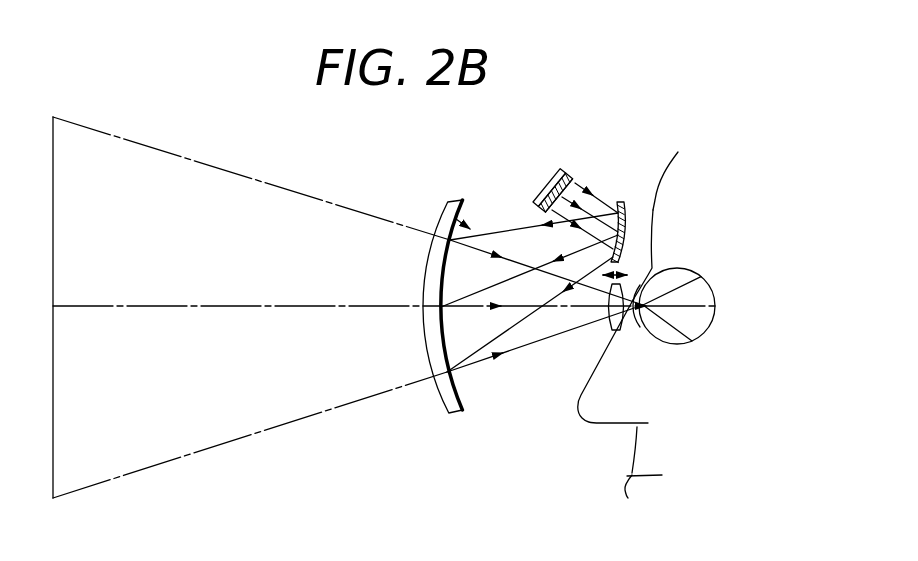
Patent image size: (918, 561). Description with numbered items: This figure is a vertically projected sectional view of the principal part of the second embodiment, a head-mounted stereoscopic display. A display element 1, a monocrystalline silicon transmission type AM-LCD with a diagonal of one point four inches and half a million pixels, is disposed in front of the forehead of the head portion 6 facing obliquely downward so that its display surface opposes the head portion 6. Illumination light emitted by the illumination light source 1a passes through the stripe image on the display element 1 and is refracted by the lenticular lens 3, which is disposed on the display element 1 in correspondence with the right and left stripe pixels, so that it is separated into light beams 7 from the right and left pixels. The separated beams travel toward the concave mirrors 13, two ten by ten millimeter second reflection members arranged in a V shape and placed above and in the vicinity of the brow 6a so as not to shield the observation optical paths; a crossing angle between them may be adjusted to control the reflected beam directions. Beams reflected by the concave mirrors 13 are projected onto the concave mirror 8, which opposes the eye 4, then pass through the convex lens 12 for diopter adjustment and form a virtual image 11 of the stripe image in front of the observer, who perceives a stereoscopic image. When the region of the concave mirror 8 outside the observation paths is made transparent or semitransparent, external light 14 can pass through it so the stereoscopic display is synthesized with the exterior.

The display element 1 is at (569, 174).
The illumination light source 1a is at (541, 194).
The lenticular lens 3 is at (576, 180).
The eye 4 is at (708, 277).
The head portion 6 is at (673, 165).
The brow 6a is at (654, 208).
The light beam 7 is at (546, 346).
The concave mirror 8 is at (460, 406).
The virtual image 11 is at (53, 353).
The convex lens 12 is at (613, 331).
The concave mirror (second reflection member) 13 is at (626, 231).
The external light 14 is at (445, 207).